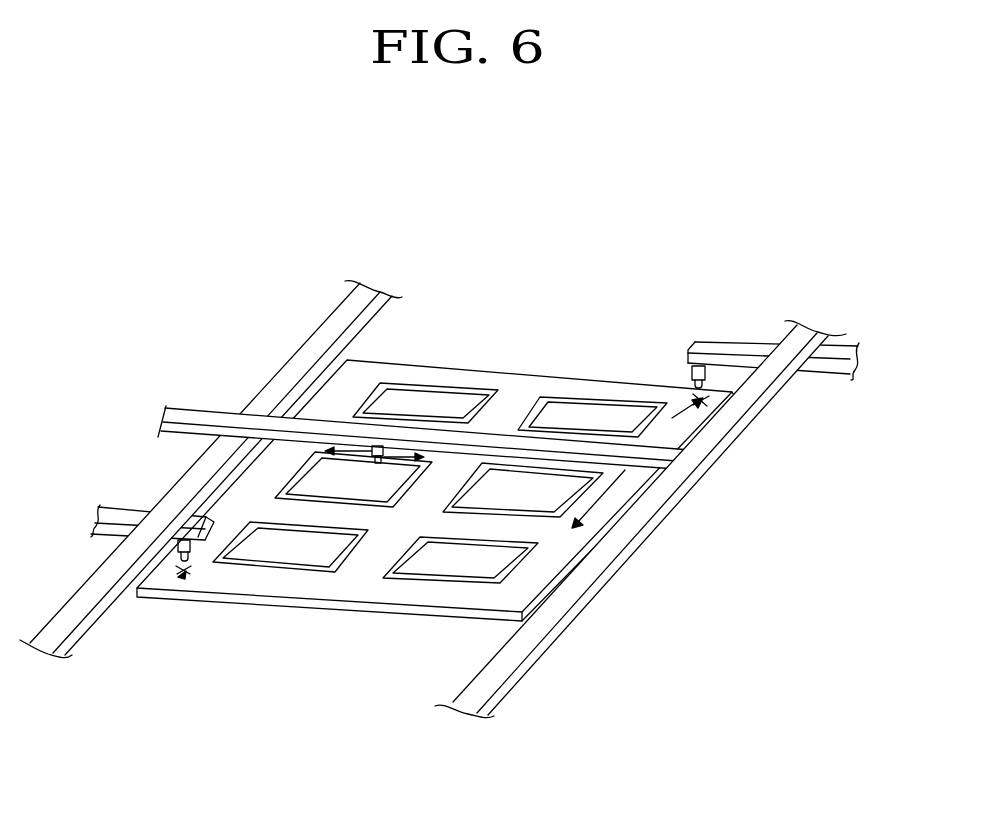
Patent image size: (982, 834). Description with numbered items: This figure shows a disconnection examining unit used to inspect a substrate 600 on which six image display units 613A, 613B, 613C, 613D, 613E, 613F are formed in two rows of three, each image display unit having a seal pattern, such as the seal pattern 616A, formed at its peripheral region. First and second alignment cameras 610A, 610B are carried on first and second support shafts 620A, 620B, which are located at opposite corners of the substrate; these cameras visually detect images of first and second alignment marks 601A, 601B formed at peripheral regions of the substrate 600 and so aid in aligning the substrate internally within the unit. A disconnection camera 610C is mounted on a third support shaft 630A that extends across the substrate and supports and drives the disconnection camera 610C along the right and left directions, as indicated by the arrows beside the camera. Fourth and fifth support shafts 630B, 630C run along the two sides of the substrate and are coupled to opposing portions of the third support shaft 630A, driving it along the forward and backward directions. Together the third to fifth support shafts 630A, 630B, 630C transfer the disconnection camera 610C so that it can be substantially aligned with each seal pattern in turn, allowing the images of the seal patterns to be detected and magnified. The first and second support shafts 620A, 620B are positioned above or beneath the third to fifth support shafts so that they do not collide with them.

The substrate 600 is at (258, 590).
The first alignment mark 601A is at (690, 390).
The second alignment mark 601B is at (185, 575).
The first alignment camera 610A is at (700, 342).
The second alignment camera 610B is at (186, 518).
The disconnection camera 610C is at (375, 465).
The image display unit 613A is at (600, 431).
The image display unit 613B is at (537, 500).
The image display unit 613C is at (476, 570).
The image display unit 613D is at (427, 416).
The image display unit 613E is at (365, 487).
The image display unit 613F is at (303, 559).
The seal pattern 616A is at (573, 395).
The first support shaft 620A is at (750, 345).
The second support shaft 620B is at (120, 508).
The third support shaft 630A is at (341, 440).
The fourth support shaft 630B is at (303, 358).
The fifth support shaft 630C is at (608, 552).